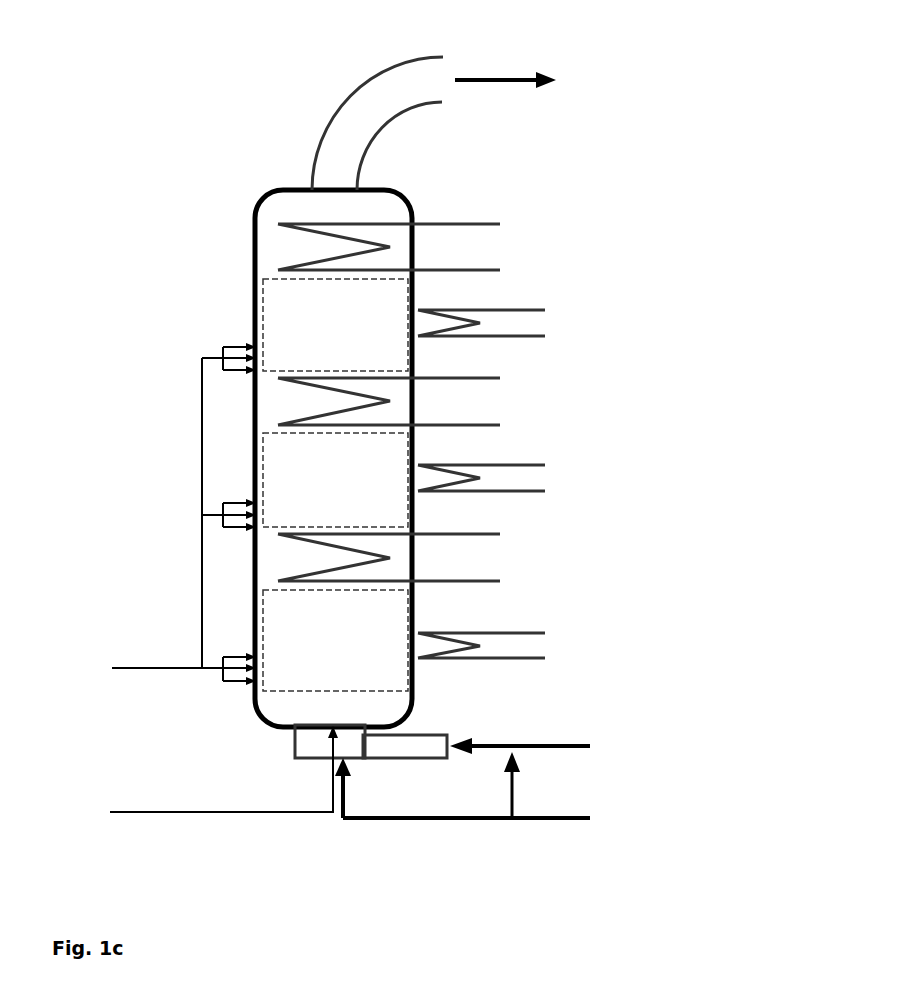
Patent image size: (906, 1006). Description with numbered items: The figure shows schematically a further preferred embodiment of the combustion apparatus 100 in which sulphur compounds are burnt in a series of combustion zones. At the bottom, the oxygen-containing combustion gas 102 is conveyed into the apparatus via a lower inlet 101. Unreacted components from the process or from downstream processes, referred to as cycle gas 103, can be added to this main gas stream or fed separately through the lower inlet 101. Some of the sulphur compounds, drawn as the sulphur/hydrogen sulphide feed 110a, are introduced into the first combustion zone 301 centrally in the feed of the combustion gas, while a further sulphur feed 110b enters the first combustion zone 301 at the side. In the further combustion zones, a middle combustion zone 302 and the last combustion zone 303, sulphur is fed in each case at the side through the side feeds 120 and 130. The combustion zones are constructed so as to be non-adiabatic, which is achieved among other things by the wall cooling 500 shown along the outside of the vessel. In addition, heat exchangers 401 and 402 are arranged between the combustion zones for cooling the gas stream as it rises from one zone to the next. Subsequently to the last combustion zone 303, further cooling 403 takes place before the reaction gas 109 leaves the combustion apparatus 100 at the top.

The combustion apparatus 100 is at (236, 218).
The reaction gas 109 is at (505, 105).
The further cooling 403 is at (389, 247).
The heat exchanger 402 is at (389, 402).
The heat exchanger 401 is at (389, 557).
The last combustion zone 303 is at (335, 325).
The combustion zone 302 is at (335, 480).
The first combustion zone 301 is at (335, 640).
The wall cooling 500 is at (557, 323).
The sulphur feed 130 is at (193, 364).
The sulphur feed 120 is at (193, 520).
The sulphur feed 110b is at (222, 683).
The lower inlet 101 is at (308, 752).
The sulphur compound feed 110a is at (210, 813).
The combustion gas 102 is at (550, 754).
The cycle gas 103 is at (497, 796).